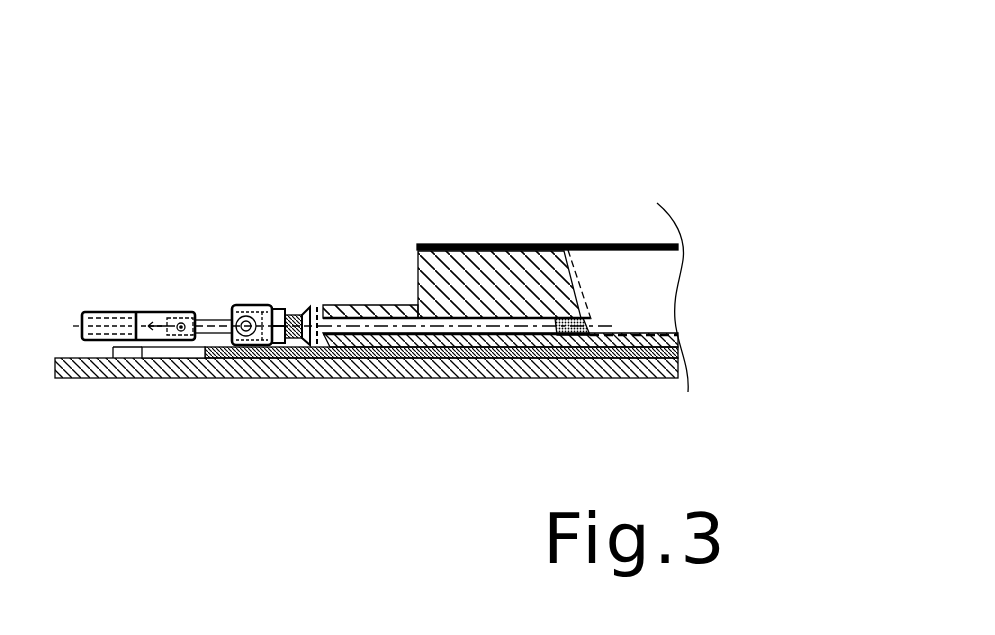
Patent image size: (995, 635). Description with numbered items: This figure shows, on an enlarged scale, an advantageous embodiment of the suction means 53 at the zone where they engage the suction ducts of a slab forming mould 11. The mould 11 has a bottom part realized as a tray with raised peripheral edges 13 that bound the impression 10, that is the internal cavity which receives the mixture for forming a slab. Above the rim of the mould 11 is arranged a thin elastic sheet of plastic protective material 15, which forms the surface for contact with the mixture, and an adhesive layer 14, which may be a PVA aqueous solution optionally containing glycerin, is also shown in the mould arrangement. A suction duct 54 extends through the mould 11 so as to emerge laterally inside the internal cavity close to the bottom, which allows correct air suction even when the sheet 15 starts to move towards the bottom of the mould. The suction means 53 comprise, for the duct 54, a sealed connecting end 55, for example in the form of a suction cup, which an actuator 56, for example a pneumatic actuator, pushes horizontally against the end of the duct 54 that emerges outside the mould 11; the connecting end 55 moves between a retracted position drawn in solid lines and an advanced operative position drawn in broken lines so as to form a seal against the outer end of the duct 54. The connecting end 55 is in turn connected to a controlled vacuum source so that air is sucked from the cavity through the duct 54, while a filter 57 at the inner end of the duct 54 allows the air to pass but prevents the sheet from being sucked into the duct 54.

The impression 10 is at (590, 265).
The mould 11 is at (432, 278).
The raised peripheral edges 13 is at (483, 280).
The adhesive layer 14 is at (415, 248).
The thin elastic sheet of plastic protective material 15 is at (603, 247).
The suction means 53 is at (200, 277).
The suction duct 54 is at (387, 328).
The sealed connecting end 55 is at (308, 303).
The actuator 56 is at (130, 318).
The filter 57 is at (590, 318).